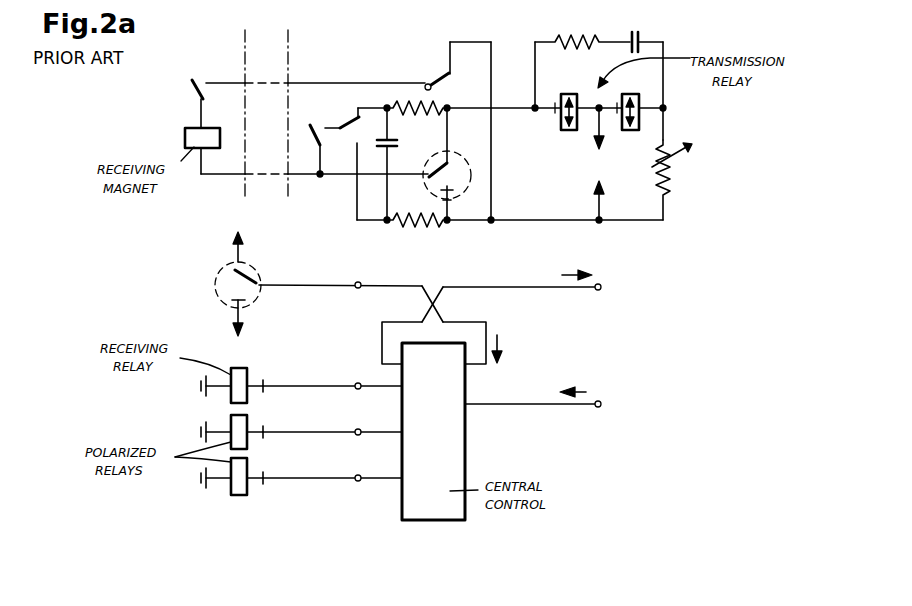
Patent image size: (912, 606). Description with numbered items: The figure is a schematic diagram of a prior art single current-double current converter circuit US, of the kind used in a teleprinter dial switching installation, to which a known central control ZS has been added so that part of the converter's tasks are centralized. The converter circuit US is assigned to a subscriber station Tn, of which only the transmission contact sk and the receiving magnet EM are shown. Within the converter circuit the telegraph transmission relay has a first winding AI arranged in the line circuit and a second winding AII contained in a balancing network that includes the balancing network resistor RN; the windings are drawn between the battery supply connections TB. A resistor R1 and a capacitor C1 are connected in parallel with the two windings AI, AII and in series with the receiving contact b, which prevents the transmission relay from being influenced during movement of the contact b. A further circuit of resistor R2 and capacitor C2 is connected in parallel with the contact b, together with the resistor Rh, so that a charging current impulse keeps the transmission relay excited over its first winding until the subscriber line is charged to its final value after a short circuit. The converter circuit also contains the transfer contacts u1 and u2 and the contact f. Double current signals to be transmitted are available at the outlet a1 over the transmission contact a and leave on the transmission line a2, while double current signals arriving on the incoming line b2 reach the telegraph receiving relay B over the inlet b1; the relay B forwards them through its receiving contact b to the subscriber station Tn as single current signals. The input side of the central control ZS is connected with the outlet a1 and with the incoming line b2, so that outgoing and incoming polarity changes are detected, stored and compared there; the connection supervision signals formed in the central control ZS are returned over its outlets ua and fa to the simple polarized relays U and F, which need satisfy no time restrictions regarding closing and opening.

The subscriber station Tn is at (234, 104).
The converter circuit US is at (358, 93).
The transmission contact sk is at (204, 104).
The receiving magnet EM is at (197, 151).
The contact f is at (309, 151).
The transfer contact u2 is at (356, 114).
The transfer contact u1 is at (454, 131).
The capacitor C2 is at (381, 164).
The resistor R2 is at (461, 121).
The resistor Rh is at (510, 185).
The receiving contact b is at (447, 164).
The resistor R1 is at (581, 63).
The capacitor C1 is at (647, 77).
The first winding AI is at (567, 100).
The second winding AII is at (631, 100).
The battery supply TB is at (616, 165).
The balancing network resistor RN is at (674, 180).
The transmission contact a is at (238, 286).
The outlet a1 is at (351, 290).
The transmission line a2 is at (534, 285).
The incoming line b2 is at (545, 402).
The central control ZS is at (433, 431).
The telegraph receiving relay B is at (232, 384).
The inlet b1 is at (332, 375).
The polarized relay U is at (236, 430).
The outlet ua is at (332, 421).
The polarized relay F is at (235, 476).
The outlet fa is at (332, 467).